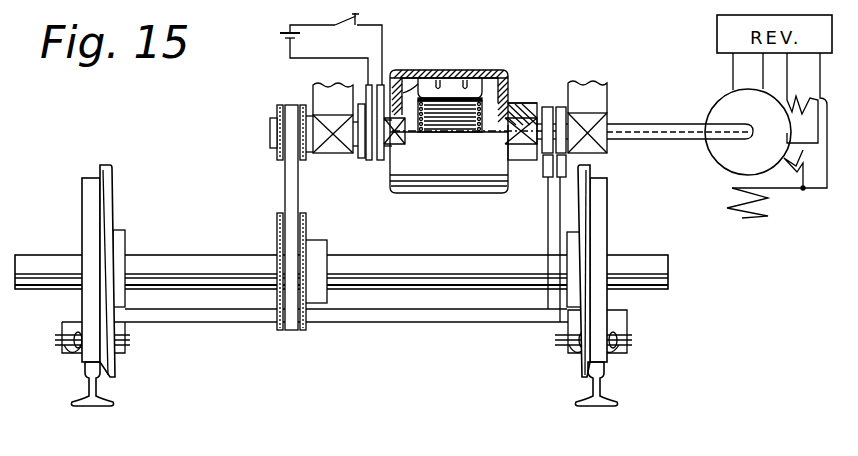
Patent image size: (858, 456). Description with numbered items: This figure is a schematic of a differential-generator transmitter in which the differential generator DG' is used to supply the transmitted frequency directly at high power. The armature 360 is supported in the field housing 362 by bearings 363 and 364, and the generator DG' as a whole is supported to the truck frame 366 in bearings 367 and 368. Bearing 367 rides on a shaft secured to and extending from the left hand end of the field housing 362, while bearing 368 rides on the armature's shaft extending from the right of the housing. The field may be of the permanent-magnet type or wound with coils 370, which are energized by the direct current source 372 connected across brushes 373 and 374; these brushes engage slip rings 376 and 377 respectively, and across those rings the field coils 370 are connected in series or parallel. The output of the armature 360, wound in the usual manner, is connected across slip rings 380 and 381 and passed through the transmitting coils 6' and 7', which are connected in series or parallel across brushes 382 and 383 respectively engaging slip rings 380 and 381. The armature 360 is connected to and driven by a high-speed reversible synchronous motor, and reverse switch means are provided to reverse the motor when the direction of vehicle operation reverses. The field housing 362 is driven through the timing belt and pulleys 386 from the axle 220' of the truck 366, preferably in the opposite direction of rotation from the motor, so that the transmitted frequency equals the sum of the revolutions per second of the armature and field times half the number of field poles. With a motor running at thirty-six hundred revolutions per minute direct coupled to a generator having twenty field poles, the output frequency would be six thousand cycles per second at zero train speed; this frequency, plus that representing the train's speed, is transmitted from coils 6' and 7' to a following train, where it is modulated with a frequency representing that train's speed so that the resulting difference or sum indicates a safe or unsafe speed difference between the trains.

The axle 220' is at (341, 260).
The transmitting coil 6' is at (366, 331).
The transmitting coil 7' is at (343, 344).
The timing belt and pulleys 386 is at (284, 198).
The truck frame 366 is at (312, 89).
The bearing 367 is at (337, 153).
The bearing 368 is at (597, 153).
The direct current source 372 is at (306, 41).
The brush 373 is at (368, 84).
The brush 374 is at (382, 85).
The slip ring 376 is at (362, 160).
The slip ring 377 is at (370, 162).
The armature 360 is at (512, 84).
The field coils 370 is at (434, 76).
The bearing 363 is at (398, 142).
The bearing 364 is at (505, 140).
The field housing 362 is at (480, 197).
The differential generator DG' is at (449, 152).
The slip ring 380 is at (553, 105).
The slip ring 381 is at (561, 107).
The brush 382 is at (548, 173).
The brush 383 is at (560, 182).